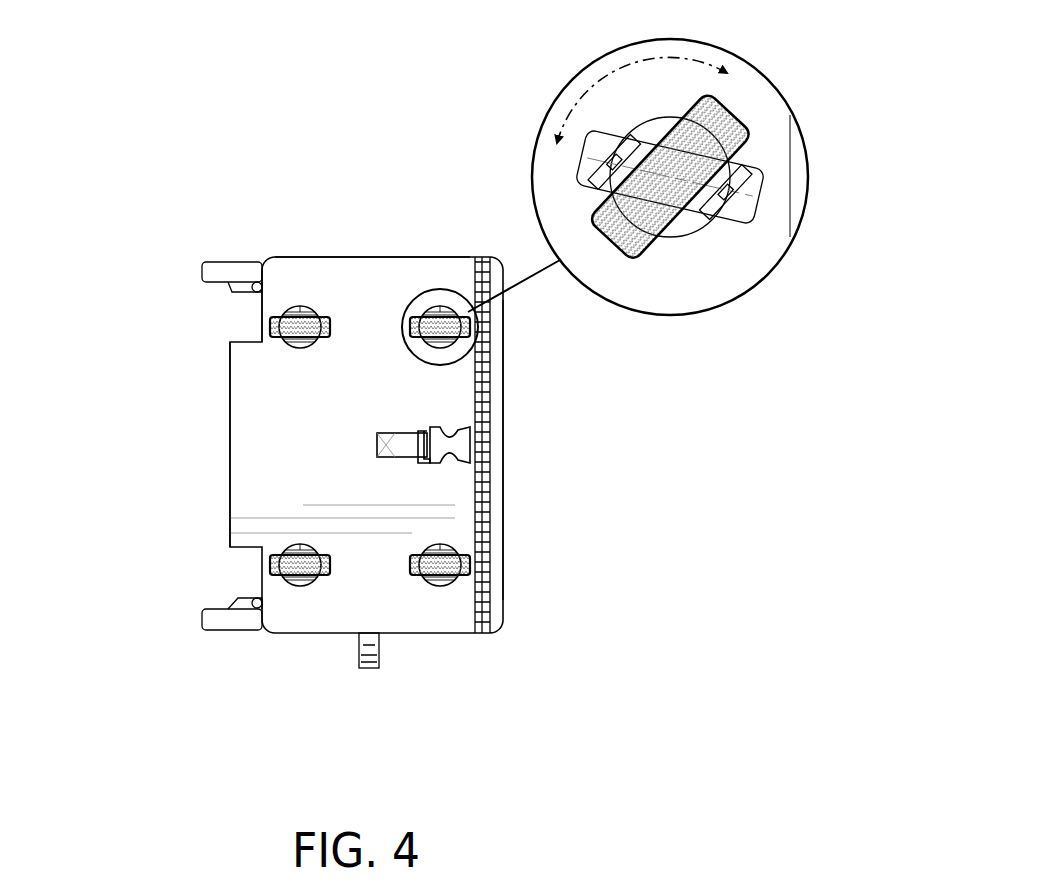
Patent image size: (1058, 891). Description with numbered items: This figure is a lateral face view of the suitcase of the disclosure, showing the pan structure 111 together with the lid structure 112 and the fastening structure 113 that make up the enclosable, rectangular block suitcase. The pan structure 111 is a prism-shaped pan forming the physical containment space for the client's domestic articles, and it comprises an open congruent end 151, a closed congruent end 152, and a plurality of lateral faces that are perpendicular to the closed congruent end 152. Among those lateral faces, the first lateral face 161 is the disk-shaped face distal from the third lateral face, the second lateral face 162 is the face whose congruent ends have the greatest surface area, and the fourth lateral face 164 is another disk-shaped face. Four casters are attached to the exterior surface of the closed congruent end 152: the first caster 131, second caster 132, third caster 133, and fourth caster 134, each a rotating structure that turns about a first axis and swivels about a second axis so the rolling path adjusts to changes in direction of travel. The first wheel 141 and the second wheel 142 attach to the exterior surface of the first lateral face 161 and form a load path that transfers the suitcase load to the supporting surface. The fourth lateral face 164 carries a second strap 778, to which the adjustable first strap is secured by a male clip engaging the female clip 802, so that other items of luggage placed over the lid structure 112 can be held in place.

The pan structure 111 is at (313, 635).
The lid structure 112 is at (503, 450).
The fastening structure 113 is at (478, 590).
The first caster 131 is at (472, 330).
The second caster 132 is at (472, 555).
The third caster 133 is at (332, 555).
The fourth caster 134 is at (330, 333).
The first wheel 141 is at (221, 262).
The second wheel 142 is at (208, 612).
The open congruent end 151 is at (477, 384).
The closed congruent end 152 is at (230, 447).
The first lateral face 161 is at (340, 258).
The second lateral face 162 is at (403, 257).
The fourth lateral face 164 is at (415, 634).
The second strap 778 is at (390, 441).
The female clip 802 is at (455, 441).